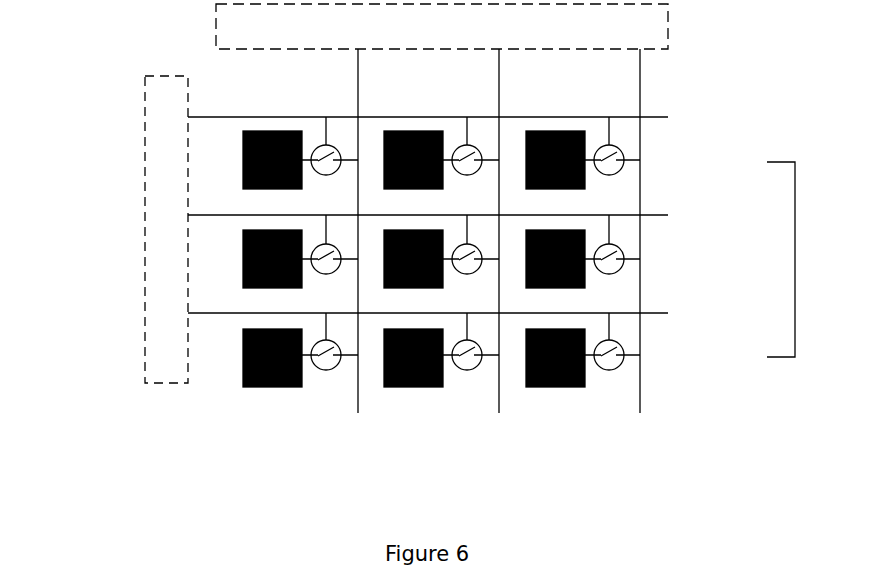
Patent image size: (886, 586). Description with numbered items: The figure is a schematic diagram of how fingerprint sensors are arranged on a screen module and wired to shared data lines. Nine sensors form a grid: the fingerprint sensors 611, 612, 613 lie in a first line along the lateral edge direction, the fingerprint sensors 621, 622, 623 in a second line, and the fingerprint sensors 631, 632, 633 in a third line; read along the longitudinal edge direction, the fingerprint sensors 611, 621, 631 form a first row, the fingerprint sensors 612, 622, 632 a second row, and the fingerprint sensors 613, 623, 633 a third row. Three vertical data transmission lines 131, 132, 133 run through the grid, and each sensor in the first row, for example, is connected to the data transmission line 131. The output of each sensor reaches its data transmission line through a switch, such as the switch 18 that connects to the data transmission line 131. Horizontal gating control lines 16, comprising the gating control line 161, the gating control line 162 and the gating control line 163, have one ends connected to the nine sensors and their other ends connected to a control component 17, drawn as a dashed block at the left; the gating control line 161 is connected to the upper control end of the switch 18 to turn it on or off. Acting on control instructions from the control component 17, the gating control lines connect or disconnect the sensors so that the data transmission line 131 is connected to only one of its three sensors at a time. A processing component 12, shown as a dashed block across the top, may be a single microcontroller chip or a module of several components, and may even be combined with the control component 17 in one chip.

The processing component 12 is at (645, 33).
The control component 17 is at (158, 315).
The switch 18 is at (320, 147).
The gating control lines 16 is at (767, 259).
The gating control line 161 is at (655, 118).
The gating control line 162 is at (655, 215).
The gating control line 163 is at (655, 313).
The data transmission line 131 is at (355, 402).
The data transmission line 132 is at (498, 402).
The data transmission line 133 is at (640, 402).
The fingerprint sensor 611 is at (243, 153).
The fingerprint sensor 612 is at (422, 131).
The fingerprint sensor 613 is at (565, 131).
The fingerprint sensor 621 is at (243, 252).
The fingerprint sensor 622 is at (384, 255).
The fingerprint sensor 623 is at (526, 253).
The fingerprint sensor 631 is at (280, 387).
The fingerprint sensor 632 is at (435, 387).
The fingerprint sensor 633 is at (568, 387).